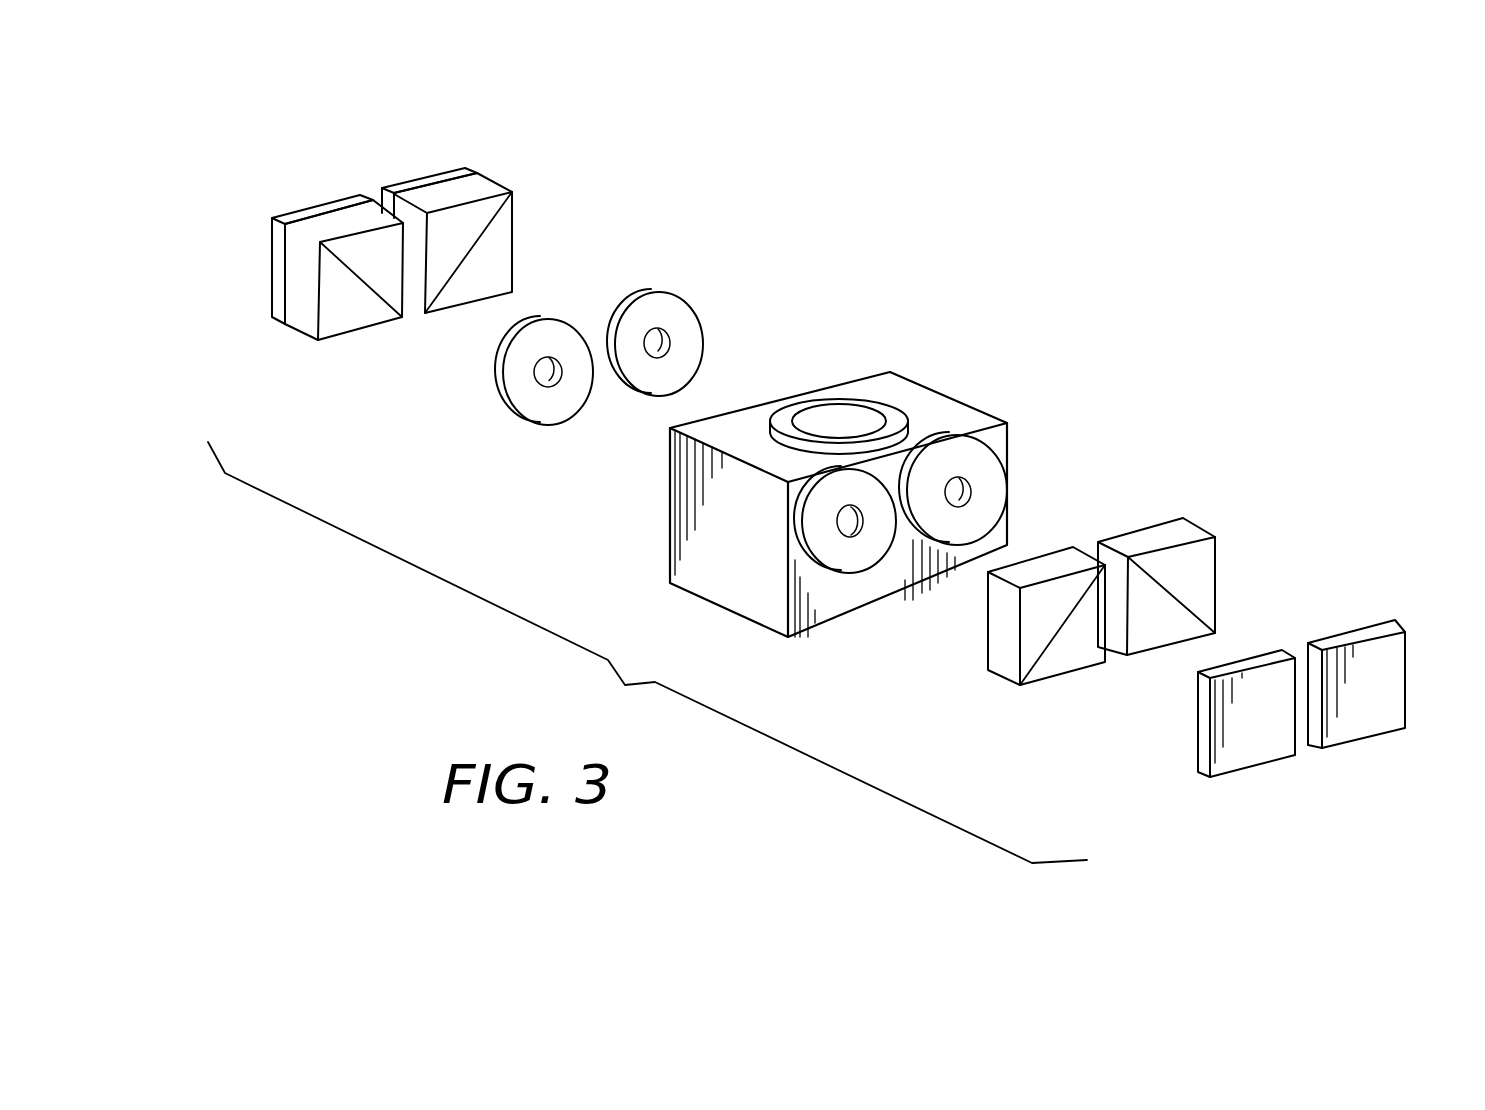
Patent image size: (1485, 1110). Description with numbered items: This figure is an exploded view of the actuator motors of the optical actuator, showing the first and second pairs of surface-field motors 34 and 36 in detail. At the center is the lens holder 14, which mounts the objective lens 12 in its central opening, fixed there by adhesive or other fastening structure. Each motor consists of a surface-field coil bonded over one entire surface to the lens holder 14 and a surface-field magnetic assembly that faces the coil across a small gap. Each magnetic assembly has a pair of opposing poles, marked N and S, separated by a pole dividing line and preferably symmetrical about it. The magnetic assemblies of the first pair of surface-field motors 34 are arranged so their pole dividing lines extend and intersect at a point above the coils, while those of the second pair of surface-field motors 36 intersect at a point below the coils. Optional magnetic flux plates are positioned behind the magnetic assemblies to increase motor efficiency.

The objective lens 12 is at (887, 403).
The lens holder 14 is at (965, 403).
The first pair of surface-field motors 34 is at (1088, 510).
The second pair of surface-field motors 36 is at (603, 291).